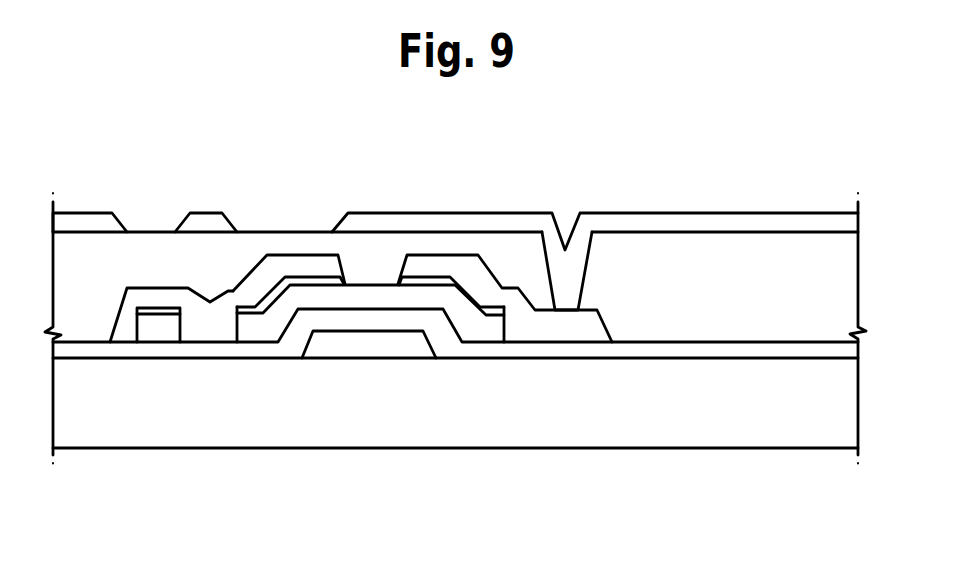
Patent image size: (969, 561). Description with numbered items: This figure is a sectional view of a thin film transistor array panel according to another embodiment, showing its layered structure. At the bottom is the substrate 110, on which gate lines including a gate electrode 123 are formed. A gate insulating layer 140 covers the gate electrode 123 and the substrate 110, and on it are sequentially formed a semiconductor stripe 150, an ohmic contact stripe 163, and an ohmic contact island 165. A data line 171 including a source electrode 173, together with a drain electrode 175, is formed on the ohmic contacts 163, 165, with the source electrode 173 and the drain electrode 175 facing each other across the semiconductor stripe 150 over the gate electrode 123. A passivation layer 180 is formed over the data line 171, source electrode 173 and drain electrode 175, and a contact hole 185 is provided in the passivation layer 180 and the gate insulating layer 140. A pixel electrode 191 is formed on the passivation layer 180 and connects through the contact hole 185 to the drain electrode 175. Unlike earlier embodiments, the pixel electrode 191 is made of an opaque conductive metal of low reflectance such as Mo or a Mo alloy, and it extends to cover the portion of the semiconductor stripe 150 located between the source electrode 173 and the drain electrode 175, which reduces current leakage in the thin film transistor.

The substrate 110 is at (693, 440).
The gate electrode 123 is at (382, 345).
The gate insulating layer 140 is at (606, 352).
The semiconductor stripe 150 is at (148, 328).
The ohmic contact stripe 163 is at (252, 310).
The ohmic contact island 165 is at (483, 312).
The data line 171 is at (125, 332).
The source electrode 173 is at (325, 263).
The drain electrode 175 is at (542, 327).
The passivation layer 180 is at (750, 240).
The contact hole 185 is at (577, 267).
The pixel electrode 191 is at (81, 211).